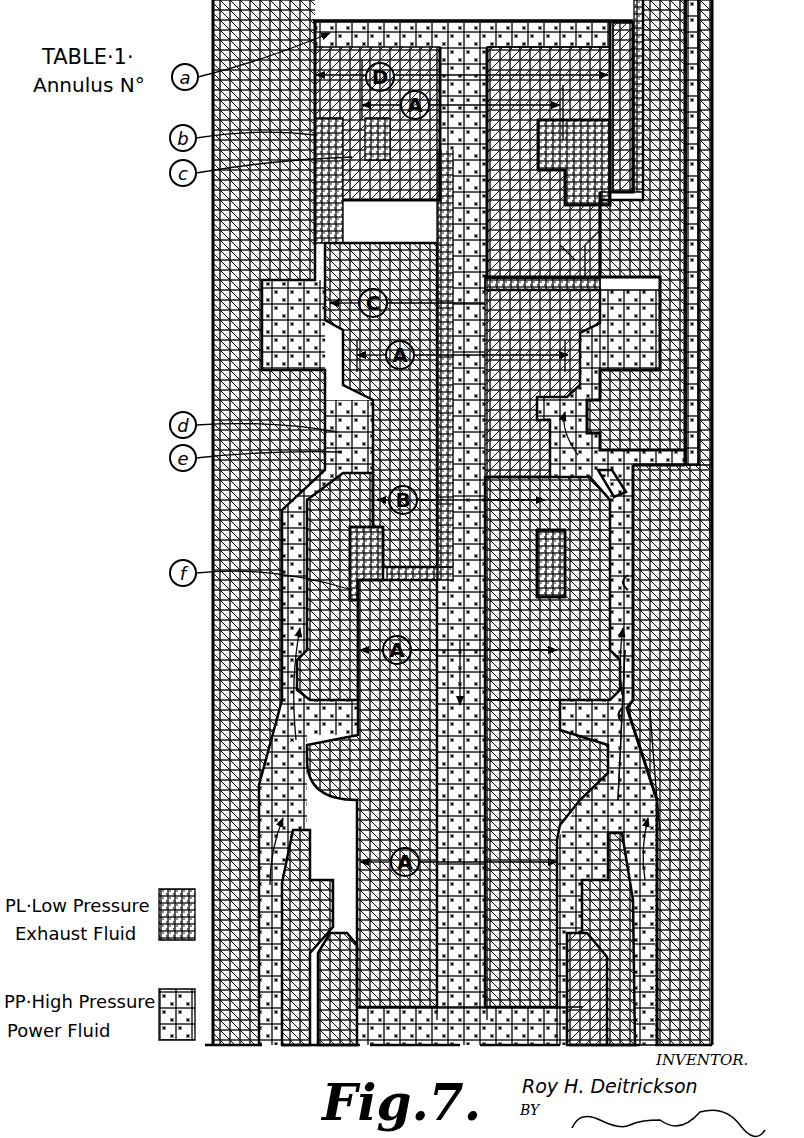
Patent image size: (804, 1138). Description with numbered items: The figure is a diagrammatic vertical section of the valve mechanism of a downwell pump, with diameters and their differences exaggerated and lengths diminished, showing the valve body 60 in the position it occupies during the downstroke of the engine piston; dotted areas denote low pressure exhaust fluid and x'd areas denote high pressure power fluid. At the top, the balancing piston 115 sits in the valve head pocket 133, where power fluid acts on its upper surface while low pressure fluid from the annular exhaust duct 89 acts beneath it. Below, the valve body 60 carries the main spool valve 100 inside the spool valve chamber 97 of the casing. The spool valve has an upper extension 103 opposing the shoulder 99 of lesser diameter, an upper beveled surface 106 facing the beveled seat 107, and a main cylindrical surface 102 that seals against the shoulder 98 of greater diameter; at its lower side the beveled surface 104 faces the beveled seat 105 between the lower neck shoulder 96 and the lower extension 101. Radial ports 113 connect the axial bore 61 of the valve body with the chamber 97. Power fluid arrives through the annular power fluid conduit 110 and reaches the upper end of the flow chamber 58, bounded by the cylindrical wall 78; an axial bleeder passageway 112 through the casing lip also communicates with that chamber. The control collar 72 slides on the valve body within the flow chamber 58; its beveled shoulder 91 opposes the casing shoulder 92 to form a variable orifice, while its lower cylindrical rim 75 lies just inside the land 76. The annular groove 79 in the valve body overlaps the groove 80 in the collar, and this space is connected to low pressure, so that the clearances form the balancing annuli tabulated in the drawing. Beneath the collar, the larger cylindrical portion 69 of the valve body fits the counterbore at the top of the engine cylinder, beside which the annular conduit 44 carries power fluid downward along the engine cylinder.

The valve head pocket 133 is at (592, 30).
The balancing piston 115 is at (616, 100).
The annular exhaust duct 89 is at (638, 138).
The valve body 60 is at (545, 165).
The upper shoulder of lesser diameter 99 is at (602, 222).
The upper beveled seat 107 is at (567, 238).
The upper shoulder of greater diameter 98 is at (602, 266).
The radial ports 113 is at (586, 288).
The main spool valve 100 is at (603, 306).
The spool valve chamber 97 is at (632, 342).
The annular power fluid conduit 110 is at (692, 380).
The upper shoulder of greater diameter 96 is at (592, 400).
The lower beveled seat 105 is at (588, 420).
The beveled shoulder 92 is at (602, 470).
The axial bleeder passageway 112 is at (628, 488).
The beveled shoulder 91 is at (632, 510).
The control collar 72 is at (612, 530).
The annular groove 80 is at (567, 555).
The cylindrical wall 78 is at (630, 582).
The flow chamber 58 is at (622, 620).
The cylindrical rim 75 is at (622, 680).
The land 76 is at (623, 715).
The annular conduit 44 is at (650, 818).
The upper extension 103 is at (562, 194).
The main cylindrical surface 102 is at (557, 250).
The upper beveled surface 106 is at (586, 240).
The lower beveled surface 104 is at (582, 330).
The lower extension 101 is at (562, 380).
The annular groove 79 is at (550, 596).
The axial bore 61 is at (470, 772).
The larger cylindrical portion 69 is at (600, 770).